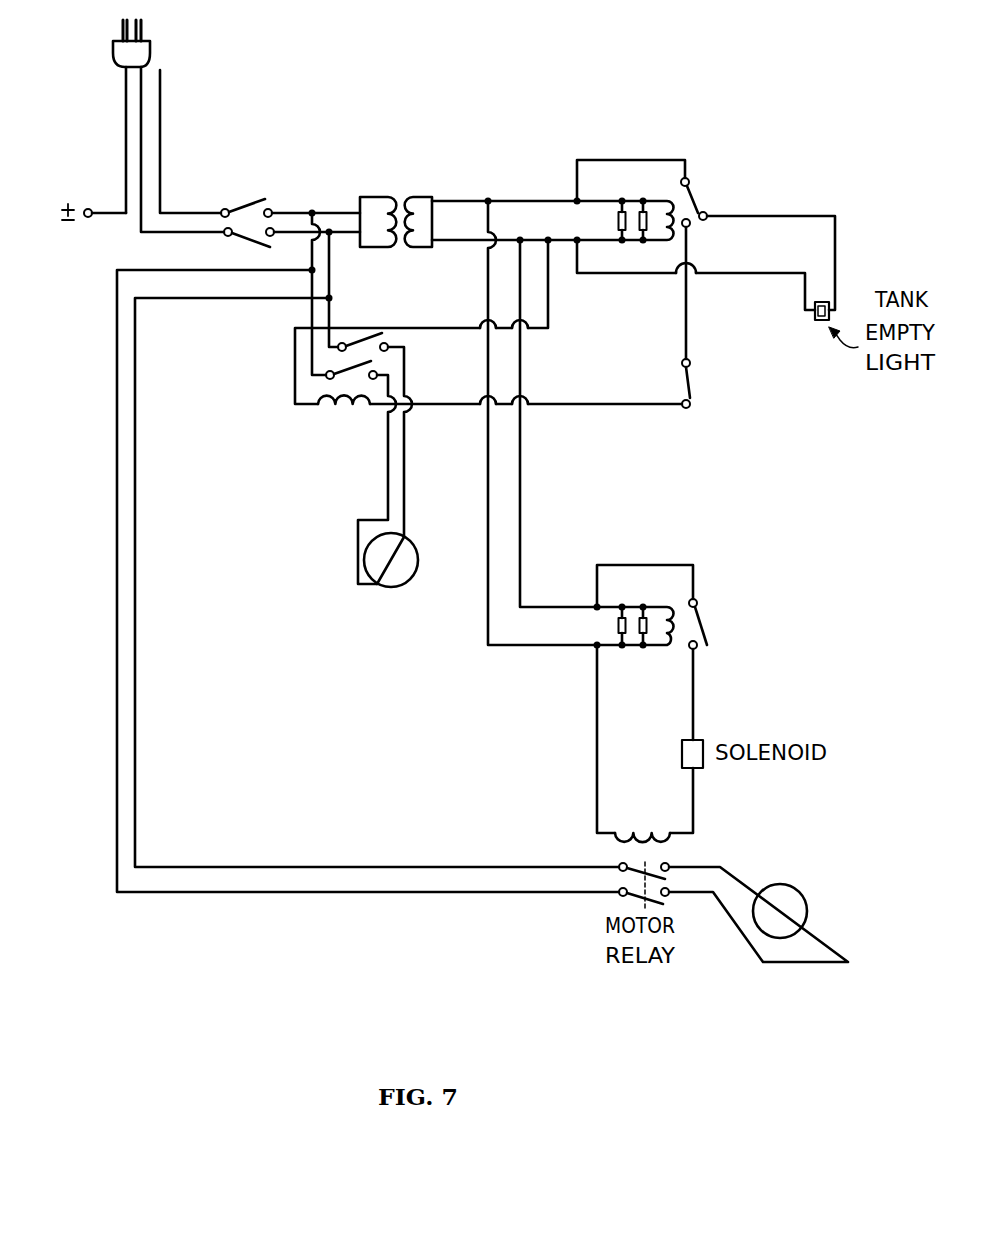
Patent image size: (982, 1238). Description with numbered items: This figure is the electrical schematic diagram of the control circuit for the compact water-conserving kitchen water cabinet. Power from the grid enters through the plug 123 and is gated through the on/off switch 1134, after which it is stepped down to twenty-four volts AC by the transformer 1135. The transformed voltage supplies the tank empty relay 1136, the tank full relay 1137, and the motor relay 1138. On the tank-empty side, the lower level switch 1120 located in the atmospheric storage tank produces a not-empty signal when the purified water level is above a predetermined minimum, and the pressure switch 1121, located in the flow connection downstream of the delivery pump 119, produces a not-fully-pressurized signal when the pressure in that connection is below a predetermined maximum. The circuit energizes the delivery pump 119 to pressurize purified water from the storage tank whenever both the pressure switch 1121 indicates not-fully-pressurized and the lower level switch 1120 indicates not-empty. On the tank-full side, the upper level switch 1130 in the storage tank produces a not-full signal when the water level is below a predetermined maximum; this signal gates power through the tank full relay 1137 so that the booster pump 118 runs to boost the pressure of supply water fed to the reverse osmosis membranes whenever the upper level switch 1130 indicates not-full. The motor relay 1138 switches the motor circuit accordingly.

The plug 123 is at (152, 48).
The on/off switch 1134 is at (232, 208).
The transformer 1135 is at (413, 197).
The tank empty relay 1136 is at (661, 180).
The lower level switch 1120 is at (702, 206).
The pressure switch 1121 is at (690, 388).
The motor relay 1138 is at (351, 405).
The delivery pump 119 is at (452, 547).
The tank full relay 1137 is at (673, 582).
The upper level switch 1130 is at (705, 625).
The booster pump 118 is at (786, 892).